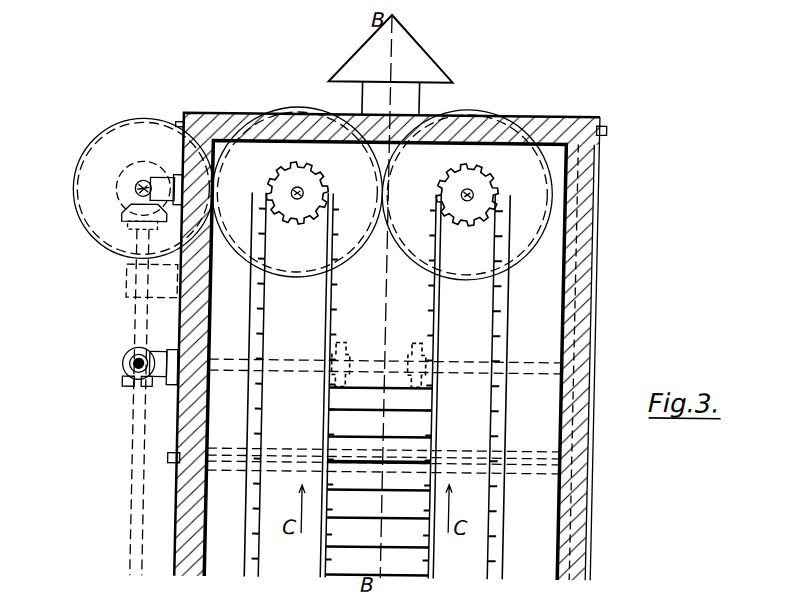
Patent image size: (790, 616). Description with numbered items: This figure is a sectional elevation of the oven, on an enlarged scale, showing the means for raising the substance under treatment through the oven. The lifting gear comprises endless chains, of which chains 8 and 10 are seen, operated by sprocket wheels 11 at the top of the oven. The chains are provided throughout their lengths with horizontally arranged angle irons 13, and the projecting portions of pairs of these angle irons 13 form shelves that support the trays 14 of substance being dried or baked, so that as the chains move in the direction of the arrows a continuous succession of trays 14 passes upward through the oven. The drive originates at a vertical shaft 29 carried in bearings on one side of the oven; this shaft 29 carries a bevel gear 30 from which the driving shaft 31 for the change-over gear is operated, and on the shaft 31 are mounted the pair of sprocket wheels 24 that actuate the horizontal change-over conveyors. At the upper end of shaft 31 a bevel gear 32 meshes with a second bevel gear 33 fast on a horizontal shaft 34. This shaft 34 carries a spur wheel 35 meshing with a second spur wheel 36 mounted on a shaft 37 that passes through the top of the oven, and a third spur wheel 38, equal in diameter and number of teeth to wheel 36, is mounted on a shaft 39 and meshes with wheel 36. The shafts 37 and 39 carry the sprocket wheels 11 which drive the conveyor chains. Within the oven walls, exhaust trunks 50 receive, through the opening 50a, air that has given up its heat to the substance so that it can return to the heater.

The endless chain 8 is at (503, 511).
The endless chain 10 is at (260, 504).
The sprocket wheels 11 is at (324, 200).
The angle irons 13 is at (254, 382).
The trays 14 is at (373, 433).
The sprocket wheels 24 is at (410, 350).
The vertical shaft 29 is at (136, 486).
The bevel gear 30 is at (136, 393).
The driving shaft 31 is at (236, 368).
The bevel gear 32 is at (124, 228).
The second bevel gear 33 is at (115, 201).
The horizontal shaft 34 is at (140, 183).
The spur wheel 35 is at (94, 145).
The second spur wheel 36 is at (283, 109).
The shaft 37 is at (294, 200).
The third spur wheel 38 is at (483, 106).
The shaft 39 is at (467, 193).
The exhaust trunks 50 is at (231, 302).
The opening 50a is at (504, 304).